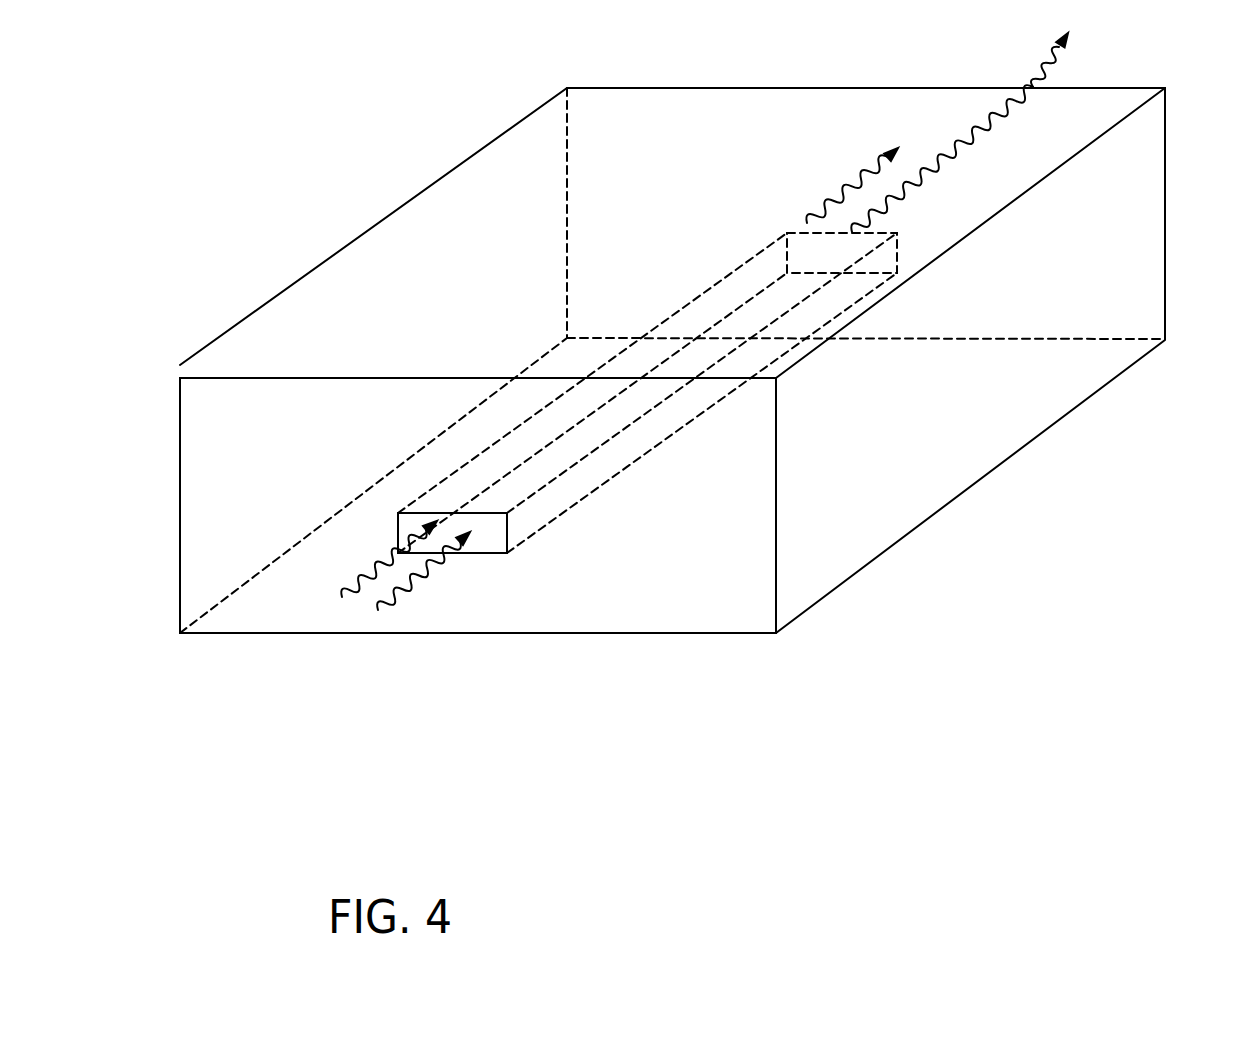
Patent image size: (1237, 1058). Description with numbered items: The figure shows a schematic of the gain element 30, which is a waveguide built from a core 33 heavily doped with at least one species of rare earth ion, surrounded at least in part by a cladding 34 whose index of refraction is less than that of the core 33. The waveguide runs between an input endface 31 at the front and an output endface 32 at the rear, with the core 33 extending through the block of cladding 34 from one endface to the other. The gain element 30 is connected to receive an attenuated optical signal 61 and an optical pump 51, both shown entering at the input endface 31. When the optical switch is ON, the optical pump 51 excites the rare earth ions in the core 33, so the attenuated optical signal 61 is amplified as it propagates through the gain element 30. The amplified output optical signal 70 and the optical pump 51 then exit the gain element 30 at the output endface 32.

The gain element 30 is at (638, 767).
The input endface 31 is at (495, 540).
The output endface 32 is at (810, 245).
The core 33 is at (665, 418).
The cladding 34 is at (435, 407).
The optical pump 51 is at (372, 583).
The attenuated optical signal 61 is at (435, 580).
The amplified output optical signal 70 is at (1023, 72).